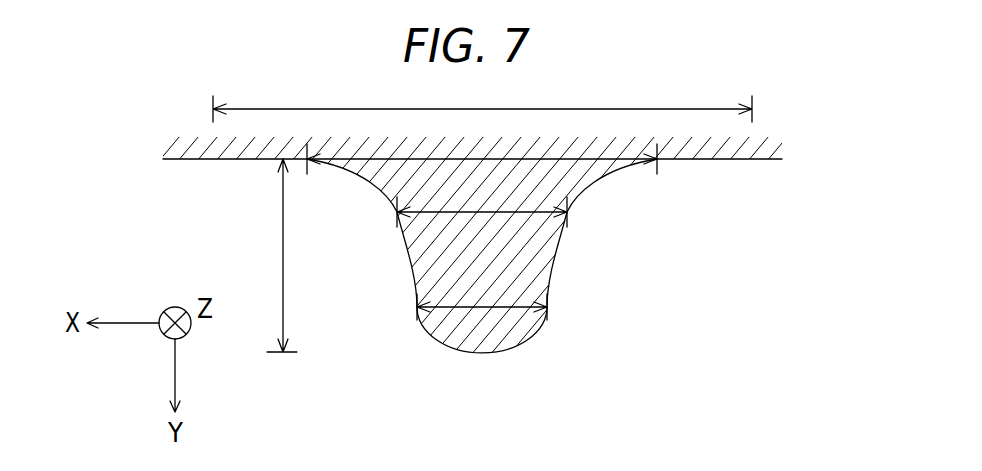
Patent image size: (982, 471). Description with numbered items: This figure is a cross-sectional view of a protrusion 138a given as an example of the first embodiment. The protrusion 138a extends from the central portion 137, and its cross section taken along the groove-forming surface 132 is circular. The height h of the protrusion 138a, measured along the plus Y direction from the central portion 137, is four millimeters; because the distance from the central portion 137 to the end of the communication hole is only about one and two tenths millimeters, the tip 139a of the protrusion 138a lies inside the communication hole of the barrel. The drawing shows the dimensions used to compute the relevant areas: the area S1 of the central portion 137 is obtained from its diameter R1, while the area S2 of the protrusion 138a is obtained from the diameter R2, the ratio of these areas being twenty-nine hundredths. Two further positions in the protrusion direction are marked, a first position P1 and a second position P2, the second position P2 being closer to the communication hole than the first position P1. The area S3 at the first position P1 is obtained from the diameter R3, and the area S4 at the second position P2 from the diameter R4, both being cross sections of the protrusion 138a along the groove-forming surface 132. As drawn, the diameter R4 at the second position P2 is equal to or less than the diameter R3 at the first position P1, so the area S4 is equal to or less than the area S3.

The groove-forming surface 132 is at (776, 183).
The central portion 137 is at (718, 178).
The protrusion 138a is at (545, 356).
The tip 139a is at (478, 354).
The first position P1 is at (584, 224).
The second position P2 is at (565, 318).
The diameter of the central portion R1 is at (482, 102).
The diameter of the protrusion R2 is at (482, 152).
The diameter of the first position R3 is at (482, 204).
The diameter of the second position R4 is at (482, 298).
The height of the protrusion h is at (279, 255).